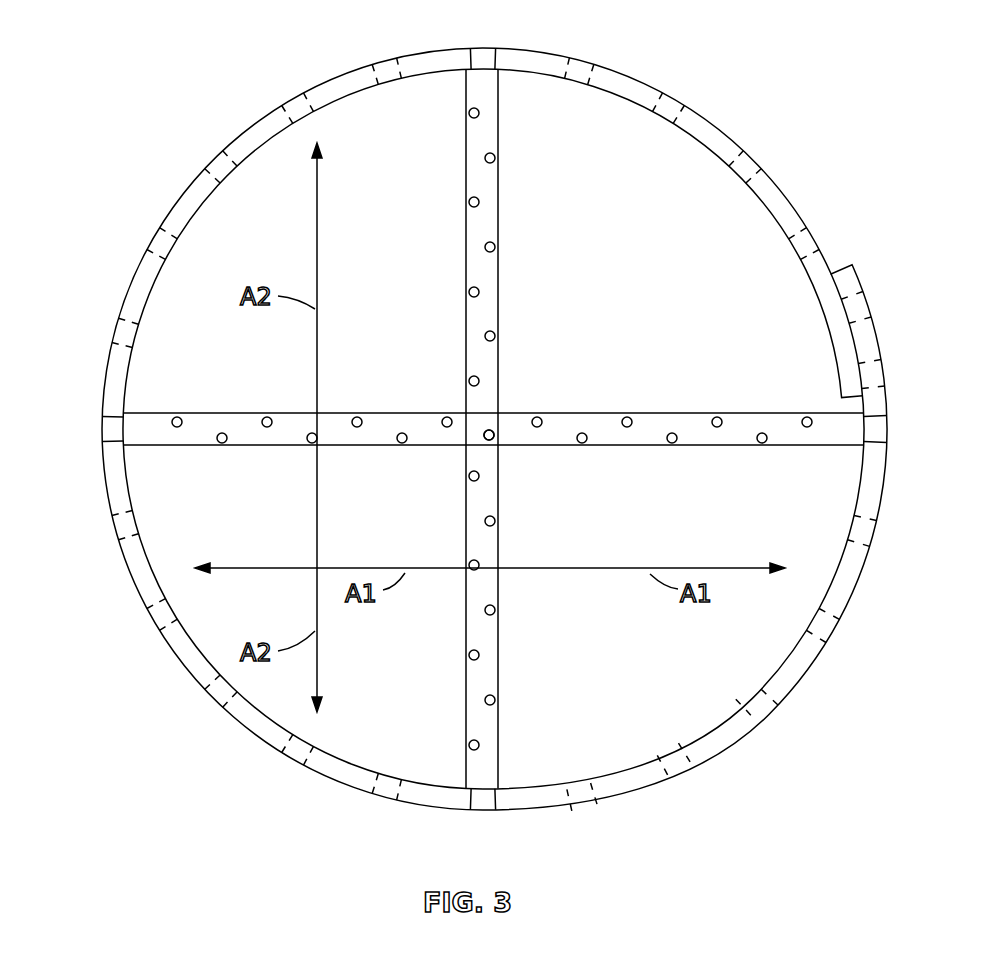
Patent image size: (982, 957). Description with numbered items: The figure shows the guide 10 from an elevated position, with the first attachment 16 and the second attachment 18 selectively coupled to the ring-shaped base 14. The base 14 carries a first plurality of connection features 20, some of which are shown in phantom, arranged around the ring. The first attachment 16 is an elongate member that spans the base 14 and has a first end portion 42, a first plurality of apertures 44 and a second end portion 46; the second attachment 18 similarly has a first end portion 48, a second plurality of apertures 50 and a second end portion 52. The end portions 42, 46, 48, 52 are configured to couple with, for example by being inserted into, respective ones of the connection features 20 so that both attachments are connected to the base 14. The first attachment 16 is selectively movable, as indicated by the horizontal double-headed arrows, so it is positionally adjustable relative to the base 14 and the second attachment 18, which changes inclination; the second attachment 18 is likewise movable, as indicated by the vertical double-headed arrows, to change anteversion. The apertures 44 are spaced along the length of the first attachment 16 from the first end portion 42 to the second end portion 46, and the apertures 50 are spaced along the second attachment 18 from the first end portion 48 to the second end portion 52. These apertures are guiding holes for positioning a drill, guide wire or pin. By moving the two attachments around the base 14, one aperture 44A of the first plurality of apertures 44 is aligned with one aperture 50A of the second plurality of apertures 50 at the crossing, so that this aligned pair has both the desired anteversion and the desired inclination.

The guide 10 is at (138, 132).
The base 14 is at (168, 212).
The first attachment 16 is at (492, 491).
The second attachment 18 is at (193, 436).
The first plurality of connection features 20 is at (290, 103).
The first end portion 42 is at (480, 47).
The first plurality of apertures 44 is at (500, 249).
The one aperture of the first plurality of apertures 44A is at (497, 438).
The second end portion 46 is at (479, 803).
The first end portion 48 is at (104, 429).
The second plurality of apertures 50 is at (632, 414).
The one aperture of the second plurality of apertures 50A is at (489, 435).
The second end portion 52 is at (876, 427).